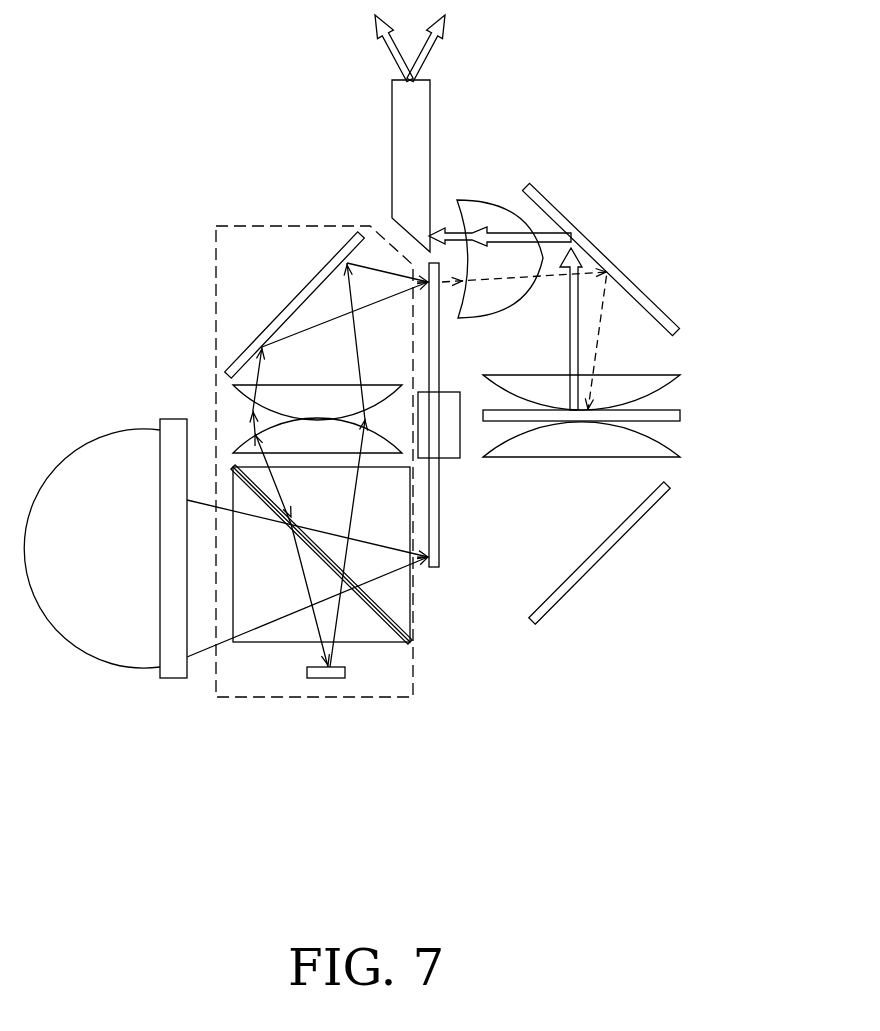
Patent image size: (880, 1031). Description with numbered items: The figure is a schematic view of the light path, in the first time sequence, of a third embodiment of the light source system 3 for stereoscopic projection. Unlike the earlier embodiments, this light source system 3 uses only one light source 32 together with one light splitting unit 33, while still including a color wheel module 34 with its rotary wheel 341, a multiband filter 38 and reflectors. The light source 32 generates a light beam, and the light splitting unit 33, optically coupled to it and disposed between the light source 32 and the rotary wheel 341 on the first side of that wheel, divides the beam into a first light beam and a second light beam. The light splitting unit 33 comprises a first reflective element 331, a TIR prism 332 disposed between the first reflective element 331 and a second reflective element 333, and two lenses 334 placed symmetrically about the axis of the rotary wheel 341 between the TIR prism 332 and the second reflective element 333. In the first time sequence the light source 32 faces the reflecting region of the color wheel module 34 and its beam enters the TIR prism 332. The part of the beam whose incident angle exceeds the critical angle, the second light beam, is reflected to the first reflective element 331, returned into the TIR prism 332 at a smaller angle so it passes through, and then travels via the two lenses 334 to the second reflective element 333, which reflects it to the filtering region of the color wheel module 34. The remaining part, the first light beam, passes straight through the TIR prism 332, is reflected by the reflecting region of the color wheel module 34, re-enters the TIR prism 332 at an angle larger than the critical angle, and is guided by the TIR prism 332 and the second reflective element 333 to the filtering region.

The light source system for stereoscopic projection 3 is at (157, 53).
The light source 32 is at (68, 468).
The light splitting unit 33 is at (273, 226).
The first reflective element 331 is at (337, 679).
The TIR prism 332 is at (255, 607).
The second reflective element 333 is at (278, 316).
The lenses 334 is at (240, 442).
The color wheel module 34 is at (434, 263).
The rotary wheel 341 is at (434, 415).
The multiband filter 38 is at (680, 414).